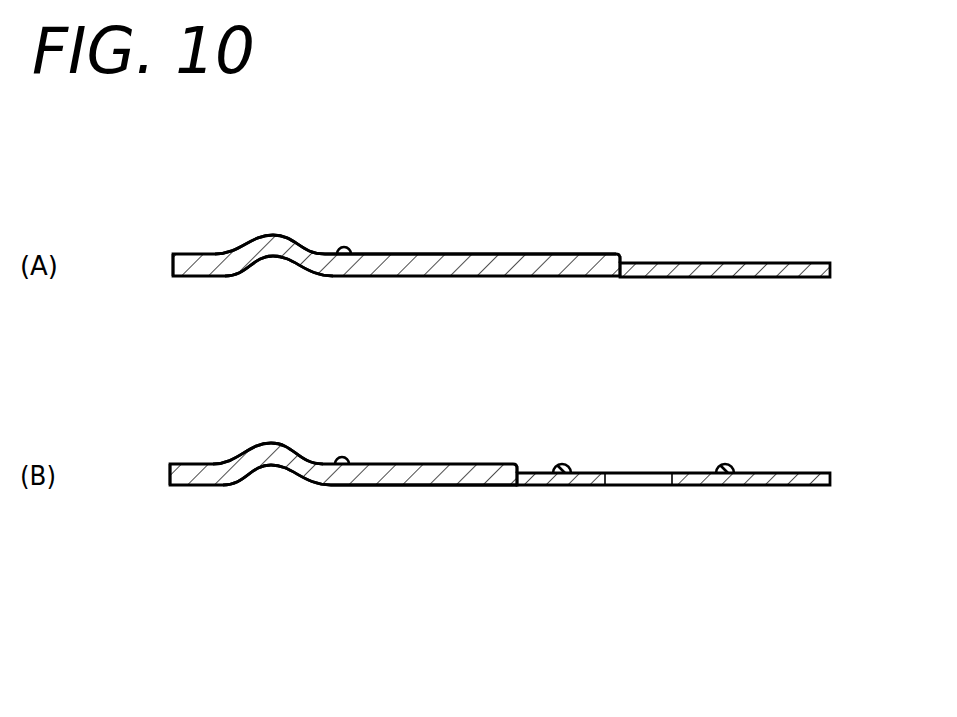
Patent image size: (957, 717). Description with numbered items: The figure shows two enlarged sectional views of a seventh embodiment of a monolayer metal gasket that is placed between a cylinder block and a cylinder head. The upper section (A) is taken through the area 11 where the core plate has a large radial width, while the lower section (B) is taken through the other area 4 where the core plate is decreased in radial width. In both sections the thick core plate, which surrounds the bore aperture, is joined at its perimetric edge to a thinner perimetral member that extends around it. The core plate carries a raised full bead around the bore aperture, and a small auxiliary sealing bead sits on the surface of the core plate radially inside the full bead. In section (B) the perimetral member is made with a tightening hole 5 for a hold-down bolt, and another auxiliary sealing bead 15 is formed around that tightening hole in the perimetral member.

The area where the core plate is decreased in radial width 4 is at (402, 486).
The tightening hole 5 is at (608, 486).
The area where the core plate has the large radial width 11 is at (423, 255).
The auxiliary sealing bead 15 is at (562, 465).